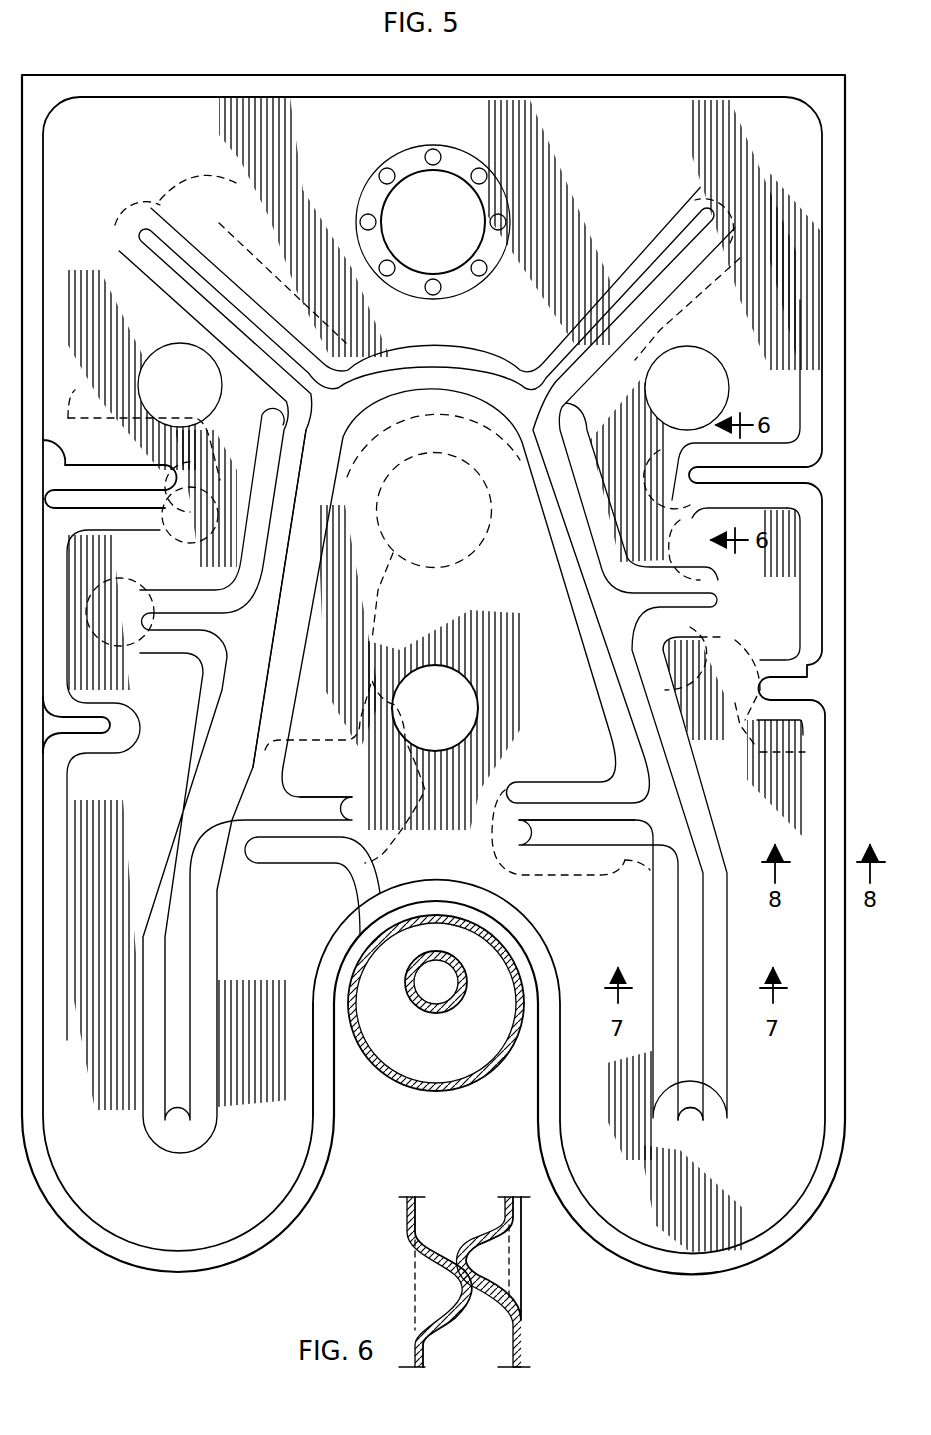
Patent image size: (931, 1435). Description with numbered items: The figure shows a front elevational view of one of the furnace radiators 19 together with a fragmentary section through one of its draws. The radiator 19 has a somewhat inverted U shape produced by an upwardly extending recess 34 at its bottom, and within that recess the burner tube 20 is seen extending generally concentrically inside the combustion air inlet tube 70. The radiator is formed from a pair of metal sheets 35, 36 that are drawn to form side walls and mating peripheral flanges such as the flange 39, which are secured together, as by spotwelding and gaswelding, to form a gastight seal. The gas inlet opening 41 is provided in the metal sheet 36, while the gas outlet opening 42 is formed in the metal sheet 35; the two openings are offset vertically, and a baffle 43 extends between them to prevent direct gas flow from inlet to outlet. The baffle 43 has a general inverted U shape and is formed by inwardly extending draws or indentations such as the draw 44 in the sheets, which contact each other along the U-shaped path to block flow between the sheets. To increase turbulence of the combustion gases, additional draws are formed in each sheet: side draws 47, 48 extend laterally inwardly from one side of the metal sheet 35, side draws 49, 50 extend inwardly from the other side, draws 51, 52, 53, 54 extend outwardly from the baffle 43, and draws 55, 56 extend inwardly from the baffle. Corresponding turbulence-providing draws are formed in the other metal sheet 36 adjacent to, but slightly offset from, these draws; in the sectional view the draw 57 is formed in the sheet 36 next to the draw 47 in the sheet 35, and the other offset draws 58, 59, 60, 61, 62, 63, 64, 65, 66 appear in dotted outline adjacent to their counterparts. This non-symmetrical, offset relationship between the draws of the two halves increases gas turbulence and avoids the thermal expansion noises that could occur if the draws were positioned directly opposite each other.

In FIG. 5, the radiator 19 is at (92, 1230).
In FIG. 5, the burner tube 20 is at (444, 1010).
In FIG. 5, the upwardly extending recess 34 is at (338, 1070).
In FIG. 6, the metal sheet 35 is at (405, 1212).
In FIG. 6, the metal sheet 36 is at (520, 1338).
In FIG. 5, the peripheral flange 39 is at (838, 775).
In FIG. 5, the gas inlet opening 41 is at (433, 527).
In FIG. 5, the gas outlet opening 42 is at (385, 242).
In FIG. 5, the baffle 43 is at (268, 692).
In FIG. 5, the draw 44 is at (692, 1090).
In FIG. 5, the side draw 47 is at (665, 460).
In FIG. 6, the side draw 47 is at (458, 1280).
In FIG. 5, the side draw 48 is at (750, 740).
In FIG. 5, the side draw 49 is at (198, 483).
In FIG. 5, the side draw 50 is at (118, 742).
In FIG. 5, the draw 51 is at (108, 600).
In FIG. 5, the draw 52 is at (137, 215).
In FIG. 5, the draw 53 is at (733, 205).
In FIG. 5, the draw 54 is at (718, 655).
In FIG. 5, the draw 55 is at (318, 855).
In FIG. 5, the draw 56 is at (552, 852).
In FIG. 5, the draw 57 is at (688, 493).
In FIG. 6, the draw 57 is at (470, 1262).
In FIG. 5, the draw 58 is at (772, 755).
In FIG. 5, the draw 59 is at (115, 418).
In FIG. 5, the draw 60 is at (132, 672).
In FIG. 5, the draw 61 is at (222, 565).
In FIG. 5, the draw 62 is at (226, 212).
In FIG. 5, the draw 63 is at (718, 300).
In FIG. 5, the draw 64 is at (663, 640).
In FIG. 5, the draw 65 is at (345, 740).
In FIG. 5, the draw 66 is at (605, 878).
In FIG. 5, the combustion air inlet tube 70 is at (436, 1086).